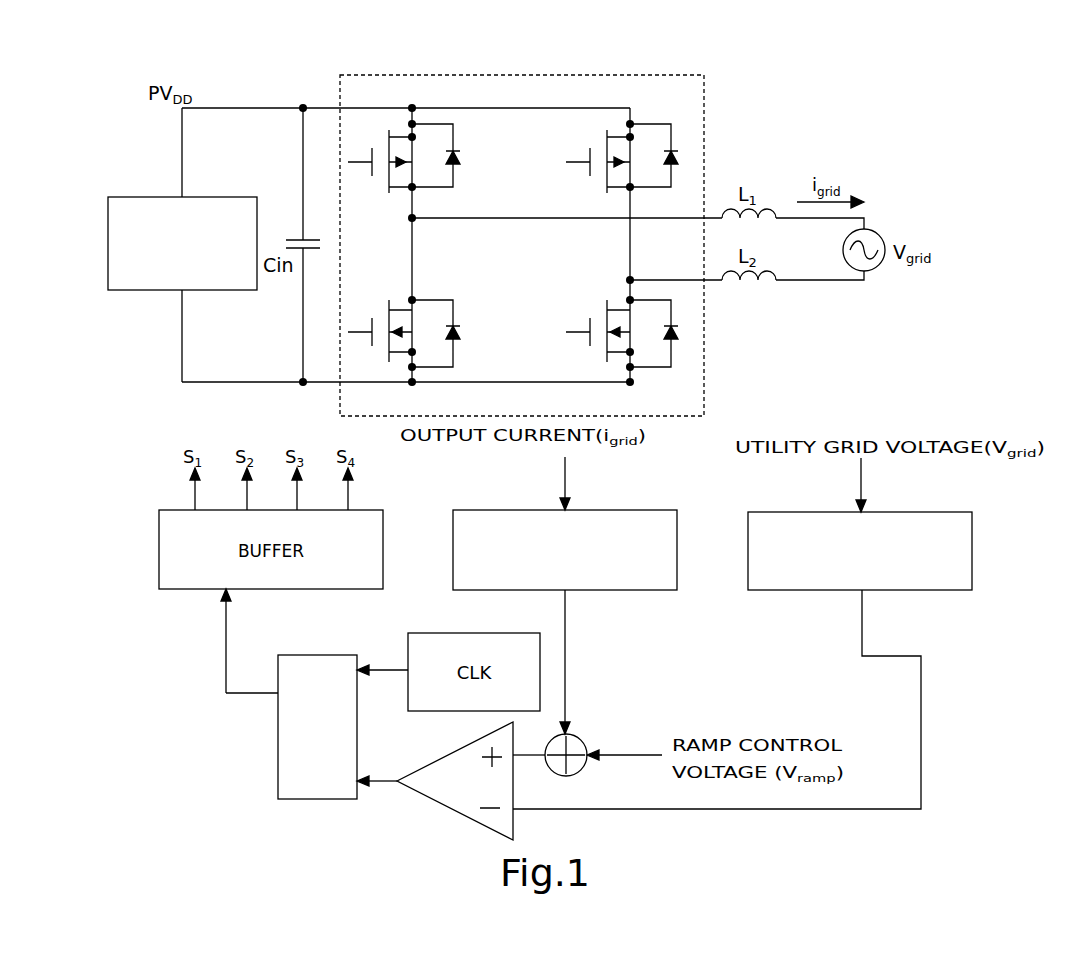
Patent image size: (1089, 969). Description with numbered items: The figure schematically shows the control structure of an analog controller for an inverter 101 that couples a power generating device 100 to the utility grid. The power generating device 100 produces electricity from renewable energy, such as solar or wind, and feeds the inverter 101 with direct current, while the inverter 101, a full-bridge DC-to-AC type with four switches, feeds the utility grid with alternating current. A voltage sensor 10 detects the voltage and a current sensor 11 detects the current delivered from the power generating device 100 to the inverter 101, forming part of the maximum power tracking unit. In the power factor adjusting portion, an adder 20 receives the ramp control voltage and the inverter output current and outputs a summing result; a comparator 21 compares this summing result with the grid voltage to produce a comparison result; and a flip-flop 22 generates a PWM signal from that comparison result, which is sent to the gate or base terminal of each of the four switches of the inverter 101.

The power generating device 100 is at (130, 197).
The inverter 101 is at (520, 75).
The current sensor 11 is at (672, 510).
The voltage sensor 10 is at (972, 540).
The flip-flop 22 is at (278, 746).
The comparator 21 is at (432, 802).
The adder 20 is at (578, 773).